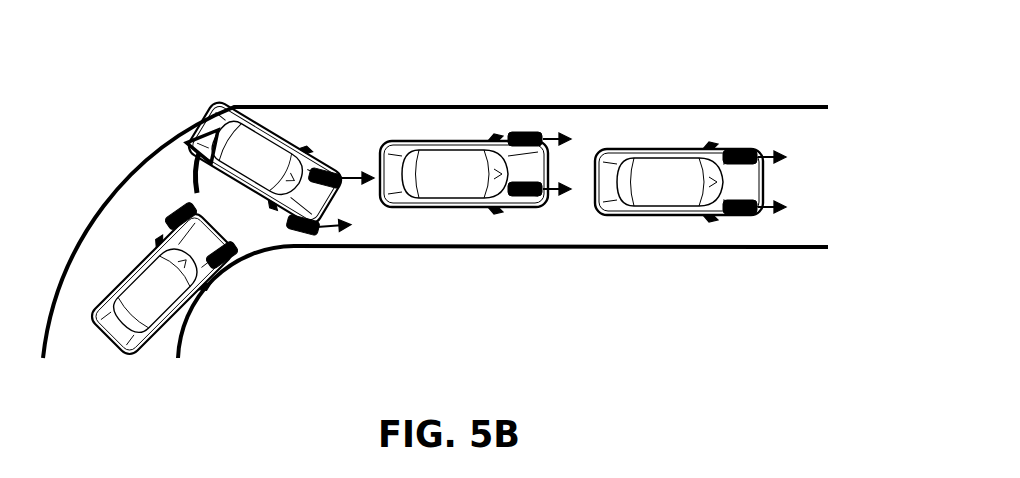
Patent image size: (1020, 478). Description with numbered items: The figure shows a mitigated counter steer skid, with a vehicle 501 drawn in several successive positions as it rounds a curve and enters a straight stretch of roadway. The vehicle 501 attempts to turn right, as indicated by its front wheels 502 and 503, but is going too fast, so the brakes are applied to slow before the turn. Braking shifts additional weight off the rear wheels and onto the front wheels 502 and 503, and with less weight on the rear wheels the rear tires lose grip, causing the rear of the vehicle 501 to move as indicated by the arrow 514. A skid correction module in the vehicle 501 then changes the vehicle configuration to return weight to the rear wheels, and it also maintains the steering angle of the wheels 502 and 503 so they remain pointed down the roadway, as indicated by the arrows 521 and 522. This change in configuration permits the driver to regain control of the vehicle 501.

The vehicle 501 is at (137, 292).
The front wheel 502 is at (176, 209).
The front wheel 503 is at (228, 260).
The arrow 514 is at (193, 177).
The arrow 521 is at (352, 168).
The arrow 522 is at (350, 232).